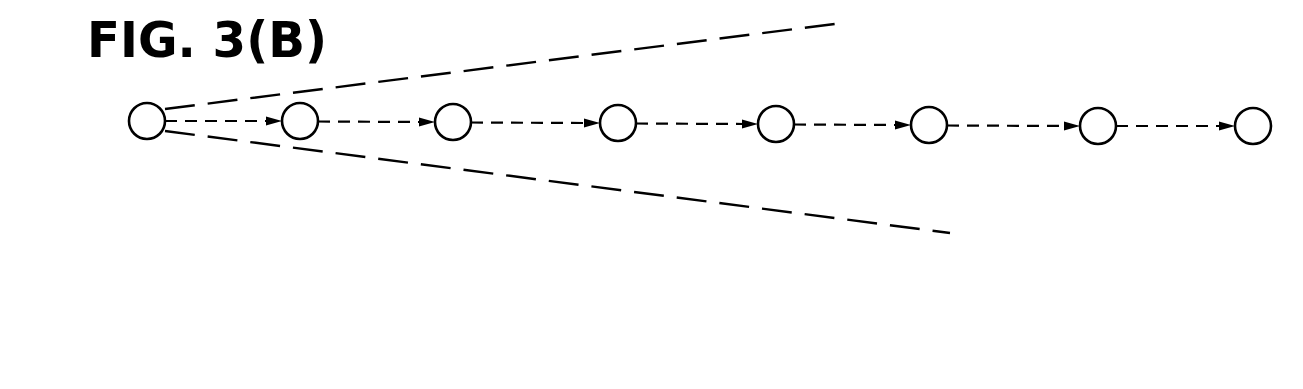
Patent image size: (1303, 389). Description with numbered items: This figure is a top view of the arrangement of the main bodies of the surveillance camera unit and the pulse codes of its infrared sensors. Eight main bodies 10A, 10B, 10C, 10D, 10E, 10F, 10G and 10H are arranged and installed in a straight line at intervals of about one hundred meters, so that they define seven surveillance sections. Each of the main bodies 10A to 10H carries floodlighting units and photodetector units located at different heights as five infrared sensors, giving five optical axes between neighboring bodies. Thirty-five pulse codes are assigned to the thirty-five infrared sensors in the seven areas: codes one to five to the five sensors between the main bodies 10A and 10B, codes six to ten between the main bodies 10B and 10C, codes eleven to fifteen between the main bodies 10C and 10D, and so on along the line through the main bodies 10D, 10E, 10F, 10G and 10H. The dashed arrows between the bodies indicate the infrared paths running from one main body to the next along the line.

The main body 10A is at (154, 142).
The main body 10B is at (296, 144).
The main body 10C is at (473, 139).
The main body 10D is at (624, 141).
The main body 10E is at (785, 143).
The main body 10F is at (939, 143).
The main body 10G is at (1107, 146).
The main body 10H is at (1261, 146).